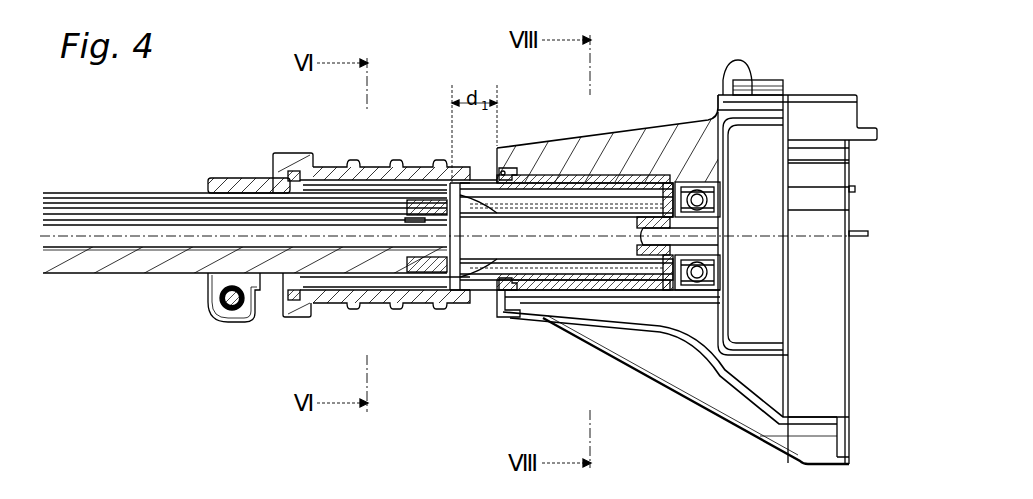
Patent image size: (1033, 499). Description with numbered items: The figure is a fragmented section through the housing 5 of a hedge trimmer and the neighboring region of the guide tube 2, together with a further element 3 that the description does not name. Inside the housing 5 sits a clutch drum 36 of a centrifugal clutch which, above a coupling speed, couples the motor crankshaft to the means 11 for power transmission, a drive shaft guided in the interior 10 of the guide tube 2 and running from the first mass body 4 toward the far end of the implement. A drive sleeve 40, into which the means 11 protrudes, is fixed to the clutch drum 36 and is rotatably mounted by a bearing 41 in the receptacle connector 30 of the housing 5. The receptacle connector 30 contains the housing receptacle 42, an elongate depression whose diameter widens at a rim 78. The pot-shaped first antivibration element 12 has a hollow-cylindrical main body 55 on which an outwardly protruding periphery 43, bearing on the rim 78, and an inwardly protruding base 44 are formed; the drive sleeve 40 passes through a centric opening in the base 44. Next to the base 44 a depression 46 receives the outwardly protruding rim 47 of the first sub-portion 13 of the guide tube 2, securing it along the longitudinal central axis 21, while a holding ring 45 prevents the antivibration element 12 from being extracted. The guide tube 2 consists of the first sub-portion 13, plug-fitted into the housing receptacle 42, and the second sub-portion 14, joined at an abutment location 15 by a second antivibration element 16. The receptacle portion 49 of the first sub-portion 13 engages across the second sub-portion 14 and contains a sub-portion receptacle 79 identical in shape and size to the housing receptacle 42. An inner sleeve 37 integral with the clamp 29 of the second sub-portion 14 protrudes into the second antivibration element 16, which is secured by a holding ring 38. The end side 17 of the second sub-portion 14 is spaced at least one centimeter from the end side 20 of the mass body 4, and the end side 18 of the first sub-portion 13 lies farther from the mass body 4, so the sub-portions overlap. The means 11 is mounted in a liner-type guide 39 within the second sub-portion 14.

The guide tube 2 is at (77, 274).
The drive motor 3 is at (640, 148).
The first mass body 4 is at (732, 416).
The housing 5 is at (730, 88).
The interior 10 is at (156, 198).
The means for power transmission 11 is at (177, 258).
The first antivibration element 12 is at (562, 322).
The first sub-portion 13 is at (438, 161).
The second sub-portion 14 is at (90, 192).
The abutment location 15 is at (318, 306).
The second antivibration element 16 is at (383, 172).
The end side 17 is at (456, 294).
The end side 18 is at (265, 158).
The end side 20 is at (499, 300).
The longitudinal central axis 21 is at (210, 256).
The clamp 29 is at (234, 179).
The receptacle connector 30 is at (605, 186).
The clutch drum 36 is at (775, 84).
The inner sleeve 37 is at (340, 304).
The holding ring 38 is at (255, 309).
The guide 39 is at (130, 256).
The drive sleeve 40 is at (672, 184).
The bearing 41 is at (694, 188).
The housing receptacle 42 is at (560, 160).
The periphery 43 is at (503, 318).
The base 44 is at (692, 296).
The holding ring 45 is at (510, 166).
The depression 46 is at (658, 312).
The rim 47 is at (660, 297).
The receptacle portion 49 is at (338, 167).
The main body 55 is at (545, 306).
The rim 78 is at (506, 170).
The sub-portion receptacle 79 is at (415, 310).